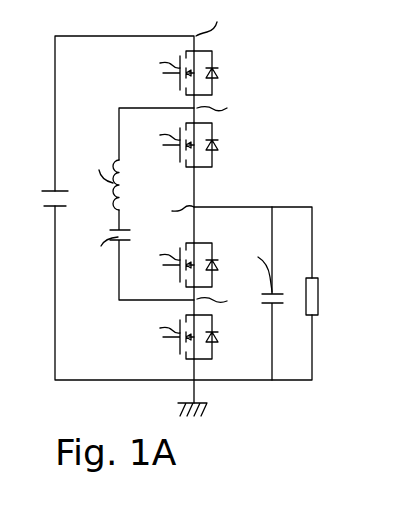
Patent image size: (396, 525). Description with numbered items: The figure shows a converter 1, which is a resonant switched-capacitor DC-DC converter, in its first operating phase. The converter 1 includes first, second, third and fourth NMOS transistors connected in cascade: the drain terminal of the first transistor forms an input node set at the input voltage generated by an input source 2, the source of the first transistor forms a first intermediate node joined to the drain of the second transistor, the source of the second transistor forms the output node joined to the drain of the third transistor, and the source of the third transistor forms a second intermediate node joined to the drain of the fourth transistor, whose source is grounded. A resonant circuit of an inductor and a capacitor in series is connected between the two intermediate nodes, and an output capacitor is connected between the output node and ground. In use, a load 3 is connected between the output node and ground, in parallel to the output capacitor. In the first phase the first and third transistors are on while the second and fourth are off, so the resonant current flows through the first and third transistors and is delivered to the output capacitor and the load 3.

The converter 1 is at (181, 209).
The input source 2 is at (49, 206).
The load 3 is at (318, 278).